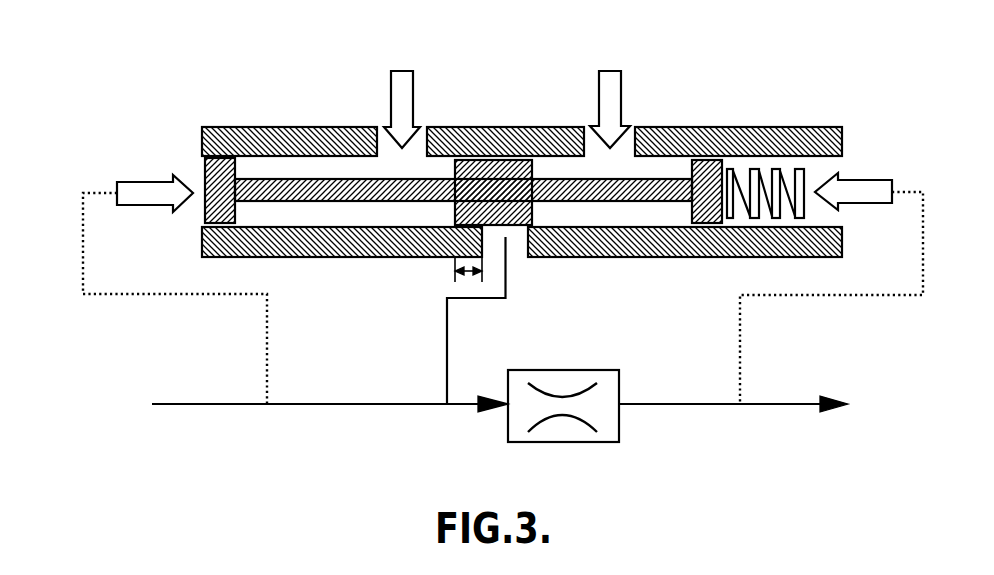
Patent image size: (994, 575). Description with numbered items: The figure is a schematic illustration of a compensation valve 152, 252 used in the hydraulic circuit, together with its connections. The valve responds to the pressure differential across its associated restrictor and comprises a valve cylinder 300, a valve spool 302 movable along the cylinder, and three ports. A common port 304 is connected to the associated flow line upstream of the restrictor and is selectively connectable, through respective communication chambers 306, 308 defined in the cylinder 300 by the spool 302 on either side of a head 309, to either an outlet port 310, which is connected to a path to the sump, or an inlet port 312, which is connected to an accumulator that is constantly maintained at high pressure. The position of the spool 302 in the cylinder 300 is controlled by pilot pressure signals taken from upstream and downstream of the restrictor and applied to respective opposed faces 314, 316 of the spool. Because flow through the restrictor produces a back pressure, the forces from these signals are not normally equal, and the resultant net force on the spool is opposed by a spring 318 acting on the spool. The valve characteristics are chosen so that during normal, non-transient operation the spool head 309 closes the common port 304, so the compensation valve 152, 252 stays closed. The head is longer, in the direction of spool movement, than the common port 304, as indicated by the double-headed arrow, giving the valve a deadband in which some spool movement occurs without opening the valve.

The compensation valve 152 is at (500, 240).
The compensation valve 252 is at (567, 442).
The valve cylinder 300 is at (230, 126).
The valve spool 302 is at (463, 179).
The common port 304 is at (515, 250).
The communication chamber 306 is at (258, 170).
The communication chamber 308 is at (638, 170).
The head 309 is at (535, 162).
The outlet port 310 is at (401, 79).
The inlet port 312 is at (611, 79).
The face 314 is at (205, 211).
The face 316 is at (725, 163).
The spring 318 is at (775, 218).